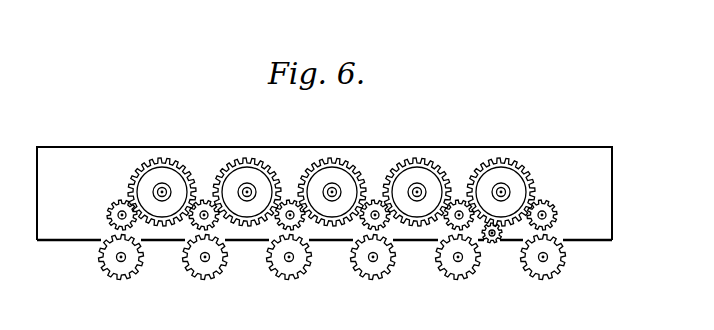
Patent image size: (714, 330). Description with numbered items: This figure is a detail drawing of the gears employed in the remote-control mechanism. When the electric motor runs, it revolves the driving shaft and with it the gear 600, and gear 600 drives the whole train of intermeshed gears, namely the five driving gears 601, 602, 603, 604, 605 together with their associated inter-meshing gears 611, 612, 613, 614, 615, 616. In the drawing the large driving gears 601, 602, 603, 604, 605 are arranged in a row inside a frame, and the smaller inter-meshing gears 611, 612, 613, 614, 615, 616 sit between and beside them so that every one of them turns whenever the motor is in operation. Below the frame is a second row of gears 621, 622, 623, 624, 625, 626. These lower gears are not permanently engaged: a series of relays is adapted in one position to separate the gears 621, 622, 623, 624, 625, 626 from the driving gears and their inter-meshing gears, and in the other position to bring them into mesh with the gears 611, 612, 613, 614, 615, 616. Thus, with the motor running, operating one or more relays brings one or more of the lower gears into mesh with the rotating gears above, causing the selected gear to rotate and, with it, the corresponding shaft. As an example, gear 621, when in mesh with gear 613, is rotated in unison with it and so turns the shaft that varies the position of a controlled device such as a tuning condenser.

The gear 600 is at (493, 244).
The driving gear 601 is at (162, 192).
The driving gear 602 is at (247, 192).
The driving gear 603 is at (332, 192).
The driving gear 604 is at (417, 192).
The driving gear 605 is at (501, 192).
The intermeshing gear 611 is at (108, 217).
The intermeshing gear 612 is at (190, 226).
The intermeshing gear 613 is at (279, 226).
The intermeshing gear 614 is at (362, 226).
The intermeshing gear 615 is at (446, 226).
The intermeshing gear 616 is at (553, 217).
The gear 621 is at (293, 265).
The gear 622 is at (377, 265).
The gear 623 is at (126, 265).
The gear 624 is at (210, 265).
The gear 625 is at (461, 265).
The gear 626 is at (546, 265).